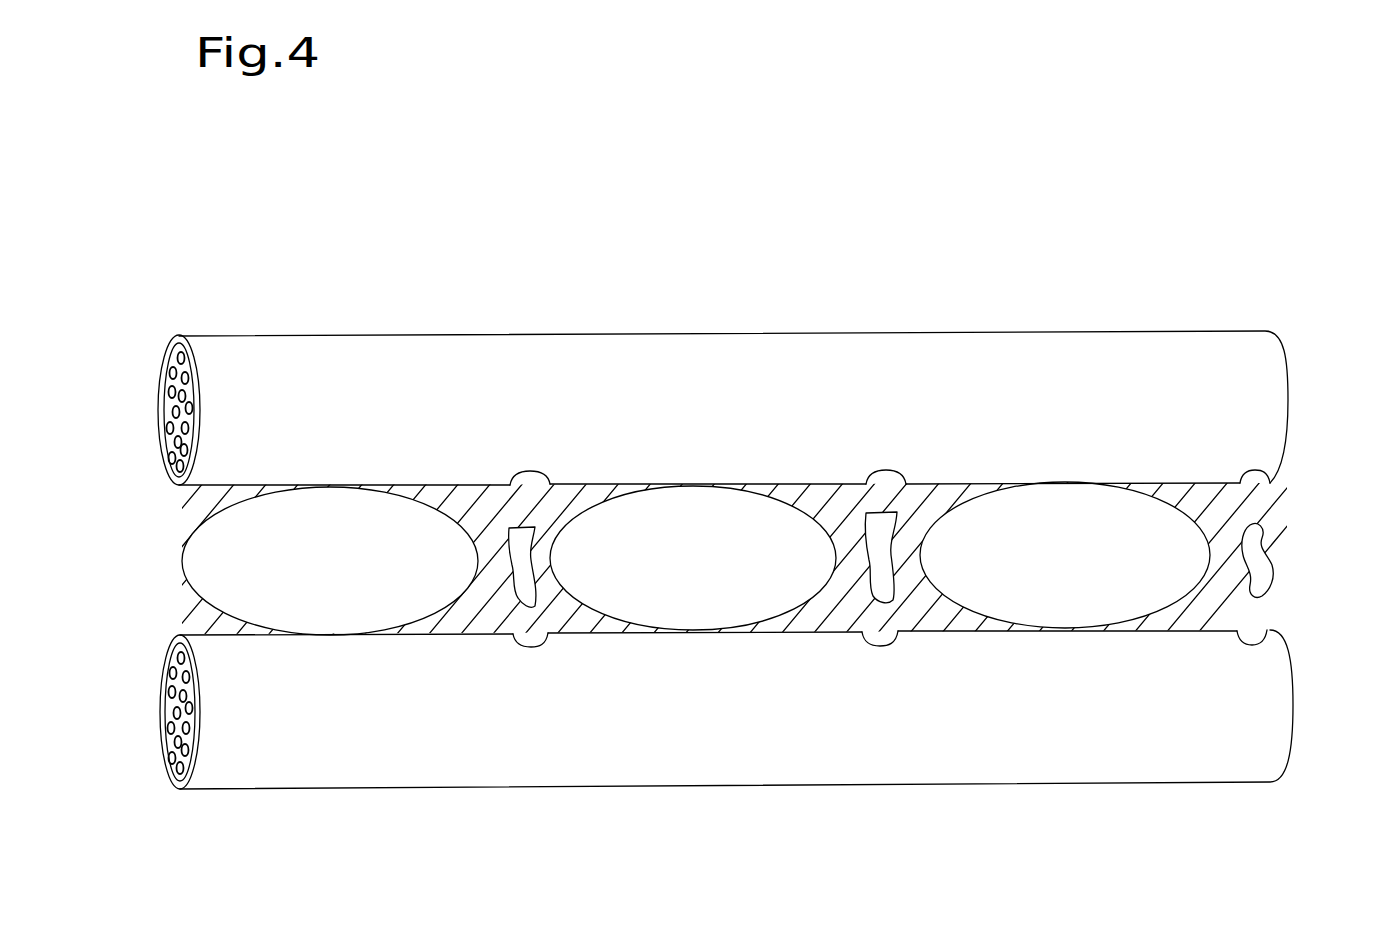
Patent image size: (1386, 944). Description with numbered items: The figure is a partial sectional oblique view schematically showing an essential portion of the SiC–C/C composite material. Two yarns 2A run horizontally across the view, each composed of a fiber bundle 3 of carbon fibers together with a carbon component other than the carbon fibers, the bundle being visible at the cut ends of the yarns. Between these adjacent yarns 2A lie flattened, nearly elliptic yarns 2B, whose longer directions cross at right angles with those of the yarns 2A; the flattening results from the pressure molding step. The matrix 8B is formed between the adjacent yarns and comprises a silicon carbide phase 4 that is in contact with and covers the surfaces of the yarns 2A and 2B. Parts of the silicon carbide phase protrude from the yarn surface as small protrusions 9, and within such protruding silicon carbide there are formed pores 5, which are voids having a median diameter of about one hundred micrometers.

The yarn 2A is at (787, 334).
The yarn 2B is at (178, 528).
The fiber bundle 3 is at (175, 420).
The silicon carbide phase 4 is at (467, 613).
The pore 5 is at (528, 605).
The matrix 8B is at (455, 483).
The small protrusion 9 is at (530, 472).